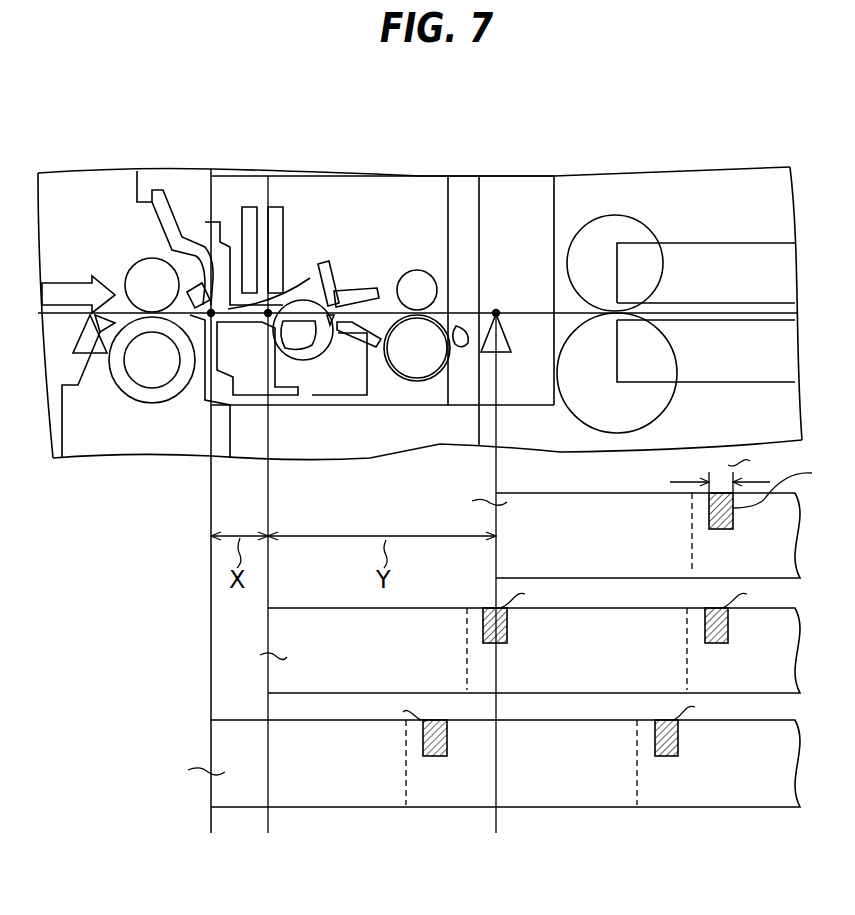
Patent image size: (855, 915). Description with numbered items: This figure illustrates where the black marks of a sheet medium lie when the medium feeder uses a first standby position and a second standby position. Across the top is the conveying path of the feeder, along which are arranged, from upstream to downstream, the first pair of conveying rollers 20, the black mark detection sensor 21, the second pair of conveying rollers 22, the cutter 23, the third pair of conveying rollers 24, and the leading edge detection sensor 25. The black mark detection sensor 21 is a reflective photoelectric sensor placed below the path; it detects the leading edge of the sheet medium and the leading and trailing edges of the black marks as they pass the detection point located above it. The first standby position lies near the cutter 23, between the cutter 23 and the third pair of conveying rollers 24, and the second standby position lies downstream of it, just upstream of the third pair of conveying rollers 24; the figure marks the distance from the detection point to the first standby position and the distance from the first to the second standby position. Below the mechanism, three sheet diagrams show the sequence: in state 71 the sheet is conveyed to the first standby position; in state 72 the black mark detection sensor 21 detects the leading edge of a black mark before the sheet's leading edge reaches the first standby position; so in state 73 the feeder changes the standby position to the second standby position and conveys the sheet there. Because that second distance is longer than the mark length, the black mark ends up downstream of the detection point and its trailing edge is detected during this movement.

The first pair of conveying rollers 20 is at (615, 214).
The black mark detection sensor 21 is at (481, 308).
The second pair of conveying rollers 22 is at (416, 268).
The cutter 23 is at (340, 265).
The third pair of conveying rollers 24 is at (152, 258).
The leading edge detection sensor 25 is at (80, 318).
The state 71 is at (183, 510).
The state 72 is at (183, 623).
The state 73 is at (183, 735).